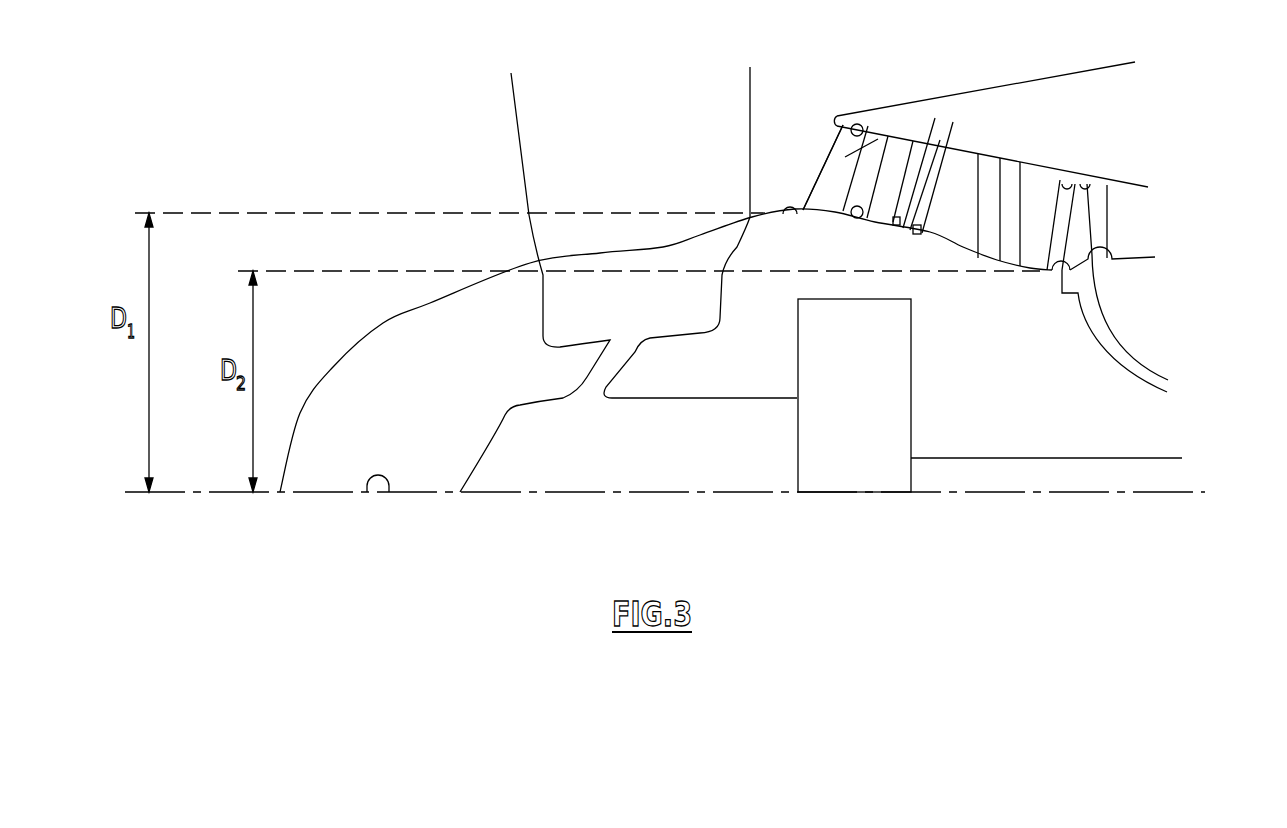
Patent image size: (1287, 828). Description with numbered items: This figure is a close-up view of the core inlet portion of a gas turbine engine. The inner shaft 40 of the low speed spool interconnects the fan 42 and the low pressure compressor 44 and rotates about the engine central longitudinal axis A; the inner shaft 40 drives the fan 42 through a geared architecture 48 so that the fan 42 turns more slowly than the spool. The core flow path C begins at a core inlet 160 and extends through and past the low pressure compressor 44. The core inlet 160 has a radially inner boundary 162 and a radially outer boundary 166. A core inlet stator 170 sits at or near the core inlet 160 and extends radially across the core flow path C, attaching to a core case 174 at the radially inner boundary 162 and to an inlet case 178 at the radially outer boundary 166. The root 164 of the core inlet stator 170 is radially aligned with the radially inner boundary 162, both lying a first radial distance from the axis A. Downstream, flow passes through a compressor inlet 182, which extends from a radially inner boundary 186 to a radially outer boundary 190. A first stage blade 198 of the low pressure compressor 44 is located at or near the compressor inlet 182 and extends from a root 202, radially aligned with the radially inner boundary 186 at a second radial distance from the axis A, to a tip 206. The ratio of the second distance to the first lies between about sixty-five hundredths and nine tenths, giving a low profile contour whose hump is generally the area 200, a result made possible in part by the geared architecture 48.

The inner shaft 40 is at (987, 475).
The fan 42 is at (638, 148).
The low pressure compressor 44 is at (1144, 160).
The geared architecture 48 is at (870, 460).
The core inlet 160 is at (806, 145).
The radially inner boundary 162 is at (783, 214).
The root 164 is at (817, 206).
The radially outer boundary 166 is at (833, 126).
The core inlet stator 170 is at (877, 140).
The core case 174 is at (857, 216).
The inlet case 178 is at (862, 128).
The compressor inlet 182 is at (1066, 230).
The radially inner boundary 186 is at (1048, 272).
The radially outer boundary 190 is at (1097, 183).
The blade 198 is at (1080, 243).
The area 200 is at (906, 252).
The root 202 is at (1113, 258).
The tip 206 is at (1060, 180).
The engine central longitudinal axis A is at (389, 492).
The core flow path C is at (954, 190).